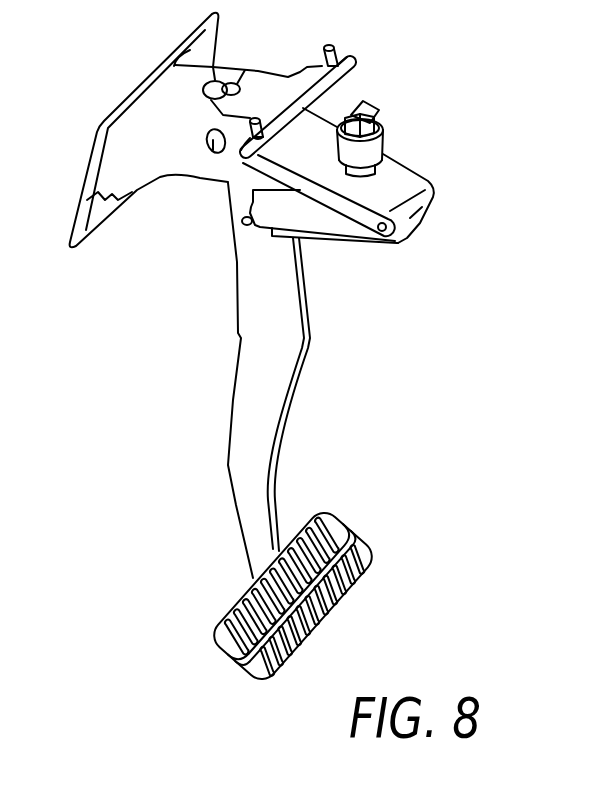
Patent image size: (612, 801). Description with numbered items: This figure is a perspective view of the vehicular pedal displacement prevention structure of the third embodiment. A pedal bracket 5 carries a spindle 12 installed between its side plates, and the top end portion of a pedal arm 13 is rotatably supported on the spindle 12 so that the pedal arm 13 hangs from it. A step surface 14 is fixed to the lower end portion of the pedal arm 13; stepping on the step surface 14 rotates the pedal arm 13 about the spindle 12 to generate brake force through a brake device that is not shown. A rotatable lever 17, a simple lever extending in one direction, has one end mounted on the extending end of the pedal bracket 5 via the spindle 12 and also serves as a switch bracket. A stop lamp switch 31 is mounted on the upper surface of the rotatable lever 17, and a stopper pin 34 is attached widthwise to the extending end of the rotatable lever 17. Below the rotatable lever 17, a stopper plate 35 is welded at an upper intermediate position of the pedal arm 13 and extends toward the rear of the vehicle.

The pedal bracket 5 is at (160, 178).
The spindle 12 is at (210, 155).
The pedal arm 13 is at (247, 382).
The step surface 14 is at (343, 520).
The rotatable lever 17 is at (405, 181).
The stop lamp switch 31 is at (388, 139).
The stopper pin 34 is at (382, 233).
The stopper plate 35 is at (325, 221).